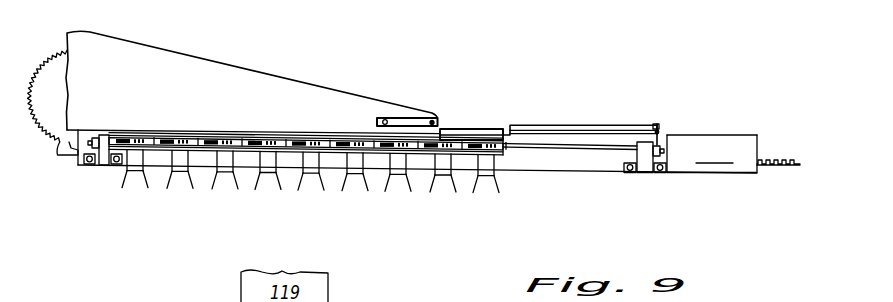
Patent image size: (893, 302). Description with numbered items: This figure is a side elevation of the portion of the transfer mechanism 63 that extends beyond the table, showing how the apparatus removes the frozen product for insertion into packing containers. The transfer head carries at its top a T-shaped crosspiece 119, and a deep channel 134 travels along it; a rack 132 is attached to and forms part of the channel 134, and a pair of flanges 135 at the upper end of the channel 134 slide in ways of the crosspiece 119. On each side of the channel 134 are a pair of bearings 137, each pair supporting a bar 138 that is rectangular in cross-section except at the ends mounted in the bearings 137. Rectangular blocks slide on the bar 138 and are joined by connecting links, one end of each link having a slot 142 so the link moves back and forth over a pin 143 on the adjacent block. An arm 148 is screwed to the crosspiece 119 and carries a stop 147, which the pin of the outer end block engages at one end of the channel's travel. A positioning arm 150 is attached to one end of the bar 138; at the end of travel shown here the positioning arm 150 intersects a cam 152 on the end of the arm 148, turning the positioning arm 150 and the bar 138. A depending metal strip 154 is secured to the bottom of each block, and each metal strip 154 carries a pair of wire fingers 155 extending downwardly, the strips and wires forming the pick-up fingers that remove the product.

The transfer mechanism 63 is at (206, 60).
The crosspiece 119 is at (263, 77).
The rack 132 is at (778, 155).
The channel 134 is at (712, 154).
The flanges 135 is at (727, 133).
The bearings 137 is at (103, 167).
The bar 138 is at (562, 152).
The slot 142 is at (305, 152).
The pin 143 is at (288, 146).
The stop 147 is at (515, 123).
The arm 148 is at (468, 125).
The positioning arm 150 is at (661, 142).
The cam 152 is at (665, 123).
The metal strip 154 is at (437, 178).
The wire fingers 155 is at (234, 188).